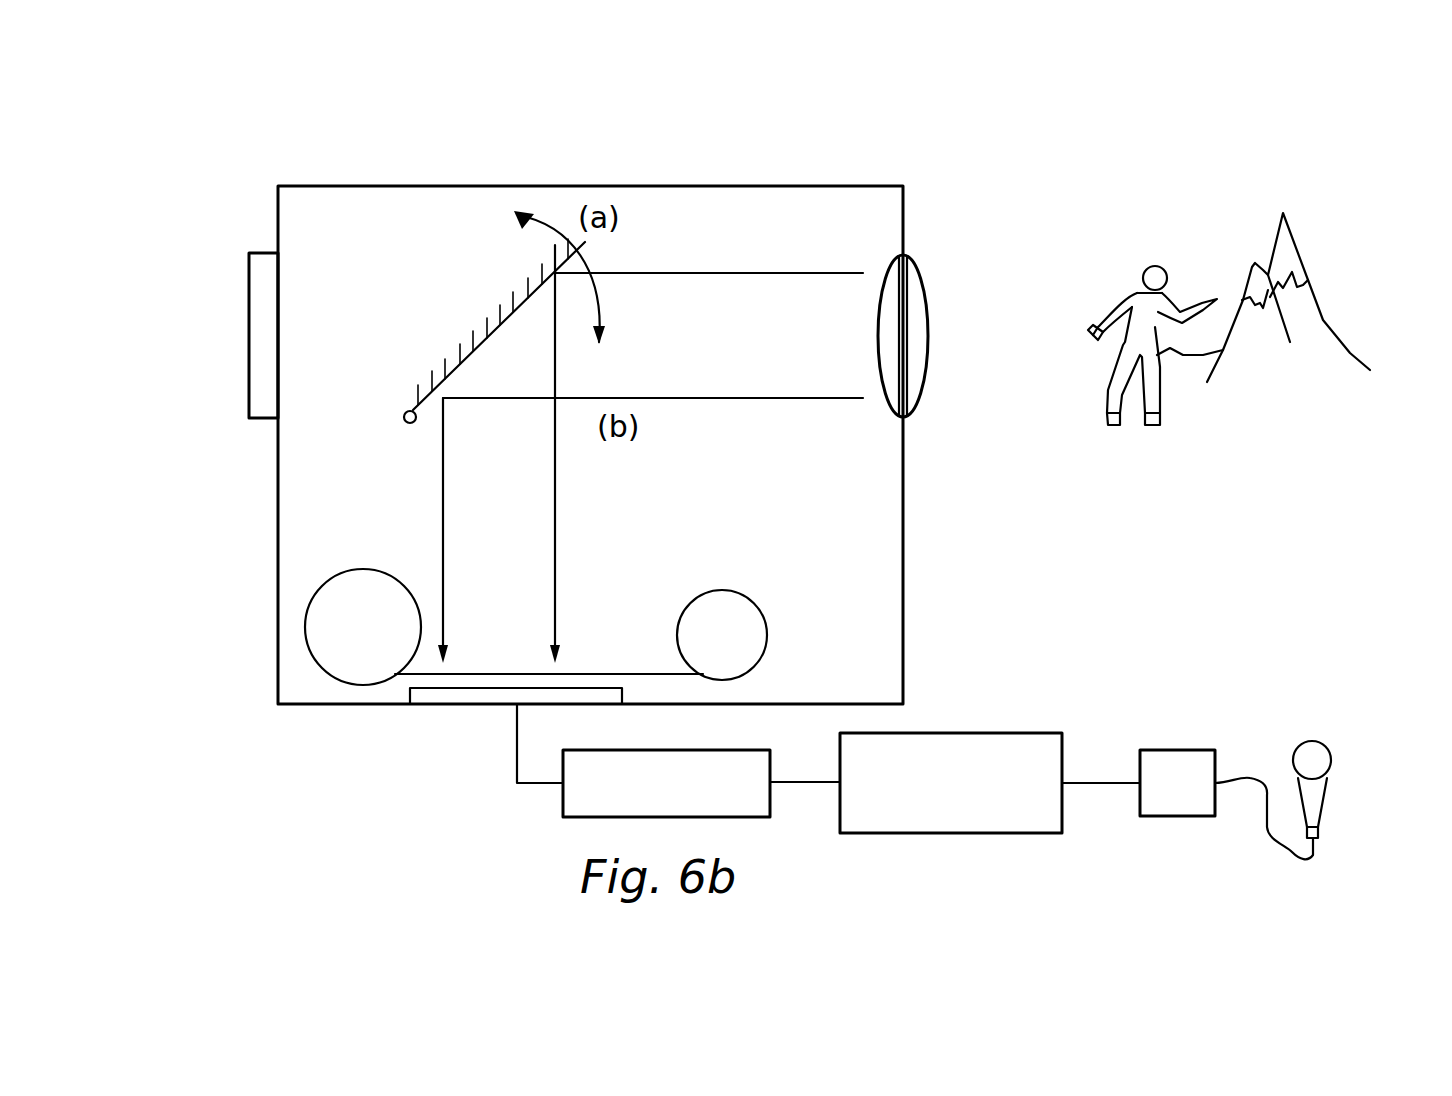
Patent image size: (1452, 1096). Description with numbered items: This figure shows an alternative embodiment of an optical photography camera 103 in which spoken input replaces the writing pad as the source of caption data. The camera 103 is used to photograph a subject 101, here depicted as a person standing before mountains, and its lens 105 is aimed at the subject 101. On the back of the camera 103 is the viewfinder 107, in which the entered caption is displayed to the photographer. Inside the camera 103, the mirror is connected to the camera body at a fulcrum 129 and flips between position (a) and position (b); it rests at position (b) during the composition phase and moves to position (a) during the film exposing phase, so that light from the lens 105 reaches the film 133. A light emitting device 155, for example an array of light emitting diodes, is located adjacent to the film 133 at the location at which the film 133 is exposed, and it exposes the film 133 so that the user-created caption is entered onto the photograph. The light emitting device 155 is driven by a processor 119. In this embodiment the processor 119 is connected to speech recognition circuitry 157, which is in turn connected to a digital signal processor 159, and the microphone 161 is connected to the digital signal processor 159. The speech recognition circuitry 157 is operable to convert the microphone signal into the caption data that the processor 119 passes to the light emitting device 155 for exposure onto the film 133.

The subject 101 is at (1275, 200).
The camera 103 is at (1050, 123).
The lens 105 is at (905, 290).
The viewfinder 107 is at (250, 395).
The processor 119 is at (563, 805).
The fulcrum 129 is at (455, 342).
The film 133 is at (602, 672).
The light emitting device 155 is at (462, 700).
The speech recognition circuitry 157 is at (958, 733).
The digital signal processor 159 is at (1177, 750).
The microphone 161 is at (1318, 742).